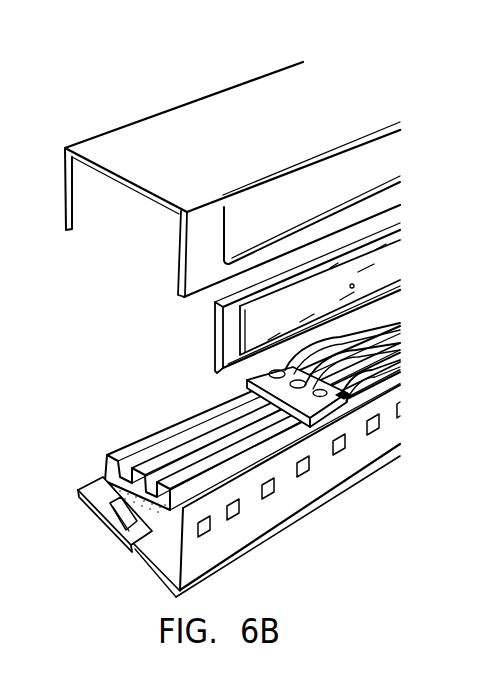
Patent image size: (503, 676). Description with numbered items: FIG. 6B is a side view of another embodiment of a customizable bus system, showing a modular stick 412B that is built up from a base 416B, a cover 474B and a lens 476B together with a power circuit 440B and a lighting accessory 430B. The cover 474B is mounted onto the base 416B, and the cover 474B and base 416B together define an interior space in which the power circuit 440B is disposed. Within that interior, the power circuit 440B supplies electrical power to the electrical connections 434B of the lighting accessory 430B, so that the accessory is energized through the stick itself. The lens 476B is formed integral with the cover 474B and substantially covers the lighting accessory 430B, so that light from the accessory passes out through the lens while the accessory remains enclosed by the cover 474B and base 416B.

The modular stick 412B is at (216, 72).
The cover 474B is at (117, 145).
The lens 476B is at (380, 263).
The electrical connections 434B is at (248, 373).
The power circuit 440B is at (198, 430).
The lighting accessory 430B is at (262, 512).
The base 416B is at (105, 512).